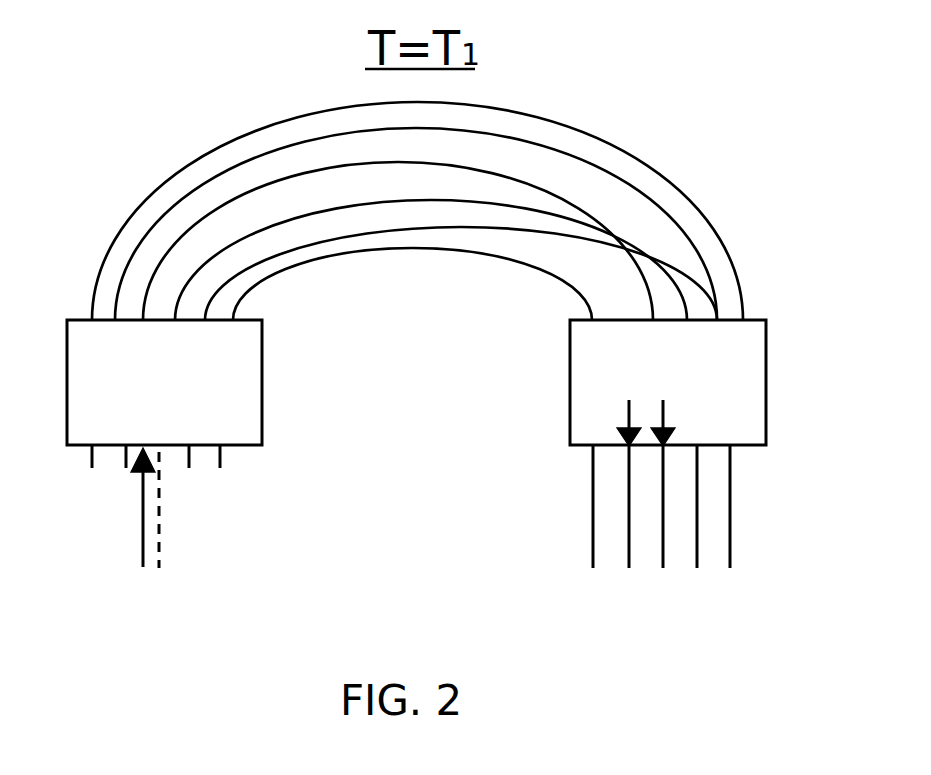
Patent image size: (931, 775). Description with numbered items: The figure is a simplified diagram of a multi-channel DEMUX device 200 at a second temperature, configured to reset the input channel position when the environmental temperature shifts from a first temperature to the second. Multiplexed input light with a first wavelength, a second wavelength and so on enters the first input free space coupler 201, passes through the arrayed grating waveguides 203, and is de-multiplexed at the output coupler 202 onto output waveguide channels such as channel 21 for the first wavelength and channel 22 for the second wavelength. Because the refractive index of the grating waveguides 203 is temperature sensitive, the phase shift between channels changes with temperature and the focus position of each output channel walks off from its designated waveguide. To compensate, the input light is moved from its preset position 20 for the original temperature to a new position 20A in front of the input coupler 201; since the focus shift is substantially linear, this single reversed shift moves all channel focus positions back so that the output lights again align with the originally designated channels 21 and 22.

The multi-channel DEMUX device 200 is at (214, 102).
The input free space coupler 201 is at (262, 409).
The output coupler 202 is at (766, 409).
The grating waveguides 203 is at (474, 240).
The preset input channel position 20 is at (144, 567).
The new input light position 20A is at (141, 484).
The output waveguide channel for wavelength λ1 21 is at (630, 540).
The output waveguide channel for wavelength λ2 22 is at (664, 556).